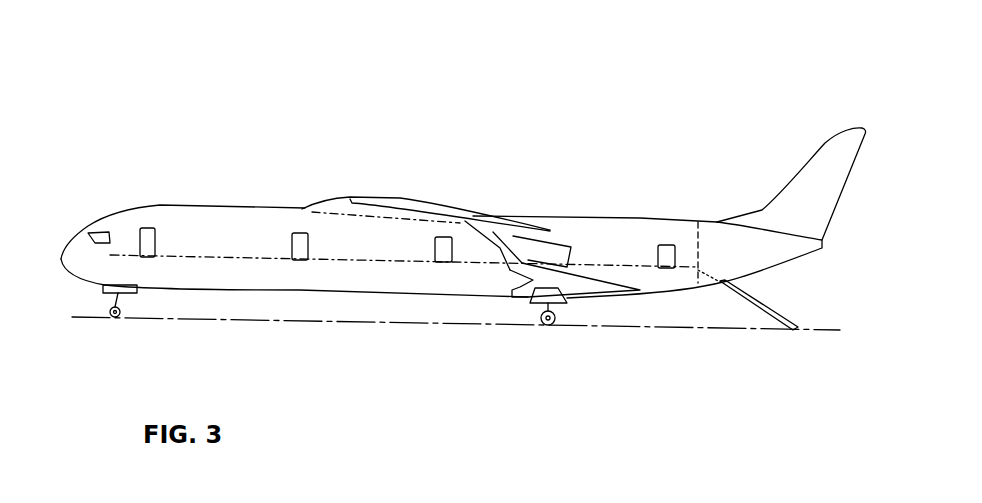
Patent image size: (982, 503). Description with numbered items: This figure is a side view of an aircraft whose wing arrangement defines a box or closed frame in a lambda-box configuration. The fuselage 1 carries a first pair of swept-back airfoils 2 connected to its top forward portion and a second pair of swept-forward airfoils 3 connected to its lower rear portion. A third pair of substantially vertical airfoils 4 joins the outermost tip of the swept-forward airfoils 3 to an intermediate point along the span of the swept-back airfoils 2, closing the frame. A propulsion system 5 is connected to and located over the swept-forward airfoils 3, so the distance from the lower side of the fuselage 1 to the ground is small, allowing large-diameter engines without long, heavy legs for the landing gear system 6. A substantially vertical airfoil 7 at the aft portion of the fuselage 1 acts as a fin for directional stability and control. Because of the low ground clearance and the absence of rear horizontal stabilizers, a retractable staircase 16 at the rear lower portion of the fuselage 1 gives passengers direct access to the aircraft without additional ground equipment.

The fuselage 1 is at (198, 228).
The first pair of swept-back airfoils 2 is at (427, 207).
The second pair of swept-forward airfoils 3 is at (583, 283).
The third pair of substantially vertical airfoils 4 is at (500, 237).
The propulsion system 5 is at (562, 247).
The landing gear system 6 is at (550, 327).
The substantially vertical airfoil 7 is at (803, 187).
The retractable staircase 16 is at (750, 307).